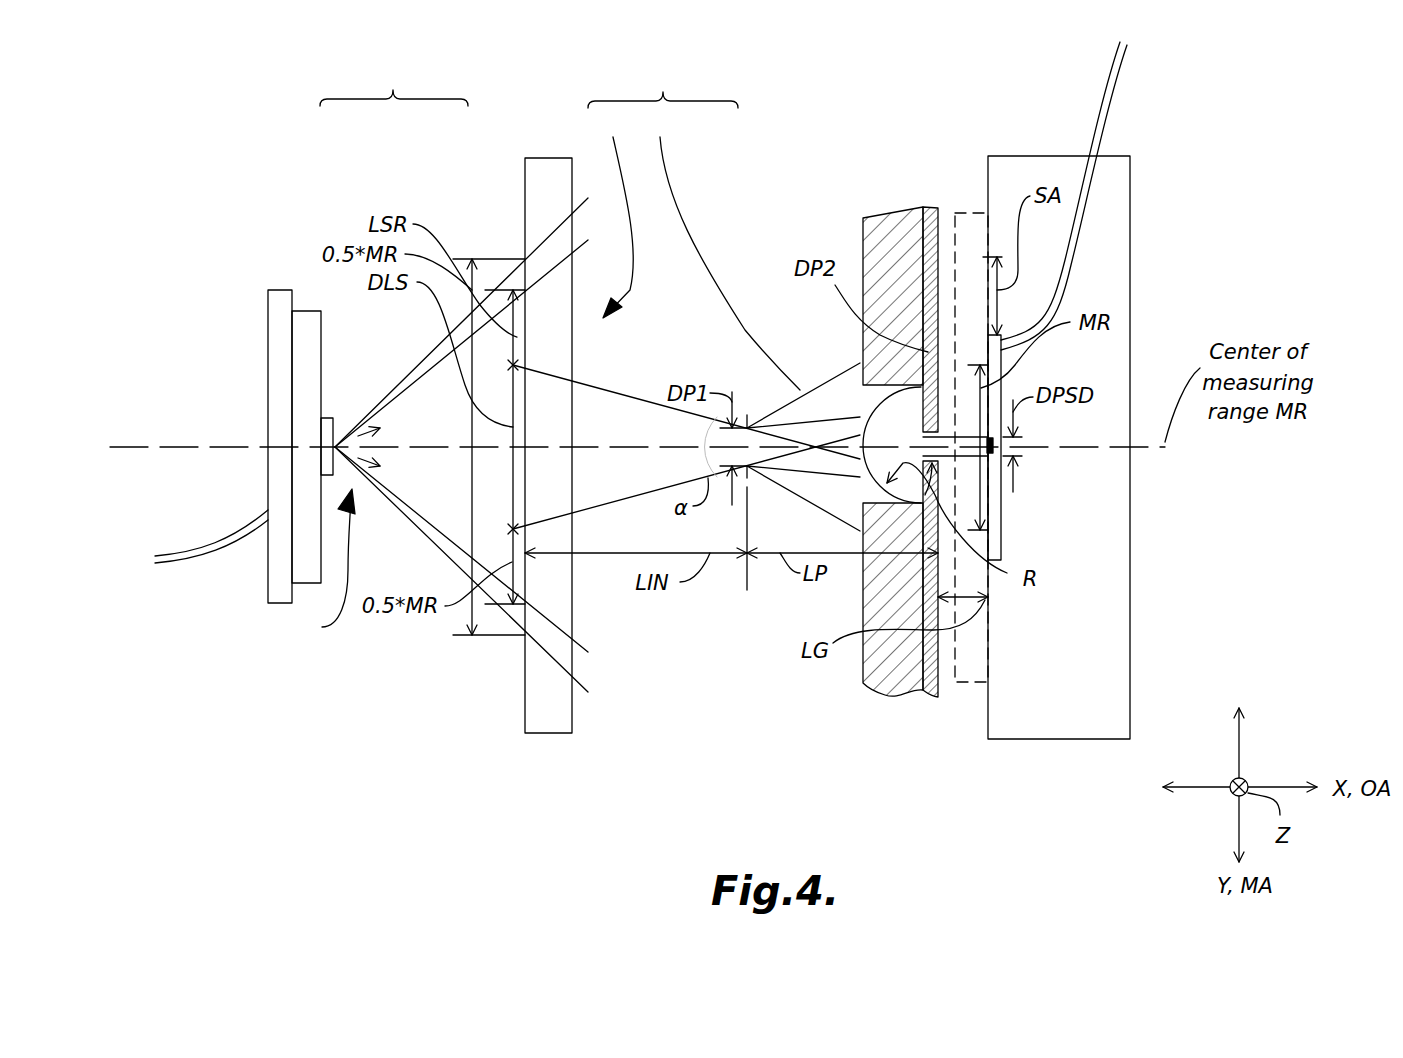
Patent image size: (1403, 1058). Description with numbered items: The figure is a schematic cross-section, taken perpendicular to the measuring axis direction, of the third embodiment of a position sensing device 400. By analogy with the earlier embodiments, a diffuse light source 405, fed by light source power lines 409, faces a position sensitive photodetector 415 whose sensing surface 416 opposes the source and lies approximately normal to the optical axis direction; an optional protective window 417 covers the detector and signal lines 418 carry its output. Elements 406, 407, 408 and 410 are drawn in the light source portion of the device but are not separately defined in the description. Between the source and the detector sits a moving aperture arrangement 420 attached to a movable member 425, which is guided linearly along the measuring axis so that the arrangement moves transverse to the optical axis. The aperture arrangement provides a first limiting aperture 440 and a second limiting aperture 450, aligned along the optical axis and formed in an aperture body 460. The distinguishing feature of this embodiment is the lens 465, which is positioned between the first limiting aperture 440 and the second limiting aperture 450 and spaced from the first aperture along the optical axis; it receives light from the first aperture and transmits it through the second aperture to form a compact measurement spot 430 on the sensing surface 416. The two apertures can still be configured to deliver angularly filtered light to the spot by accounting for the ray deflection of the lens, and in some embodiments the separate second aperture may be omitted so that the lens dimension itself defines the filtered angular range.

The position sensing device 400 is at (1240, 124).
The diffuse light source 405 is at (394, 80).
The light source housing 406 is at (330, 417).
The light source 407 is at (316, 566).
The source lens 408 is at (525, 172).
The light source power lines 409 is at (190, 563).
The source pinhole aperture plate 410 is at (748, 415).
The position sensitive photodetector 415 is at (1039, 156).
The sensing surface 416 is at (1001, 510).
The protective window 417 is at (967, 212).
The signal lines 418 is at (1100, 99).
The moving aperture arrangement 420 is at (663, 83).
The movable member 425 is at (888, 208).
The measurement spot 430 is at (1000, 452).
The first limiting aperture 440 is at (612, 216).
The second limiting aperture 450 is at (932, 435).
The aperture body 460 is at (720, 252).
The lens 465 is at (870, 390).